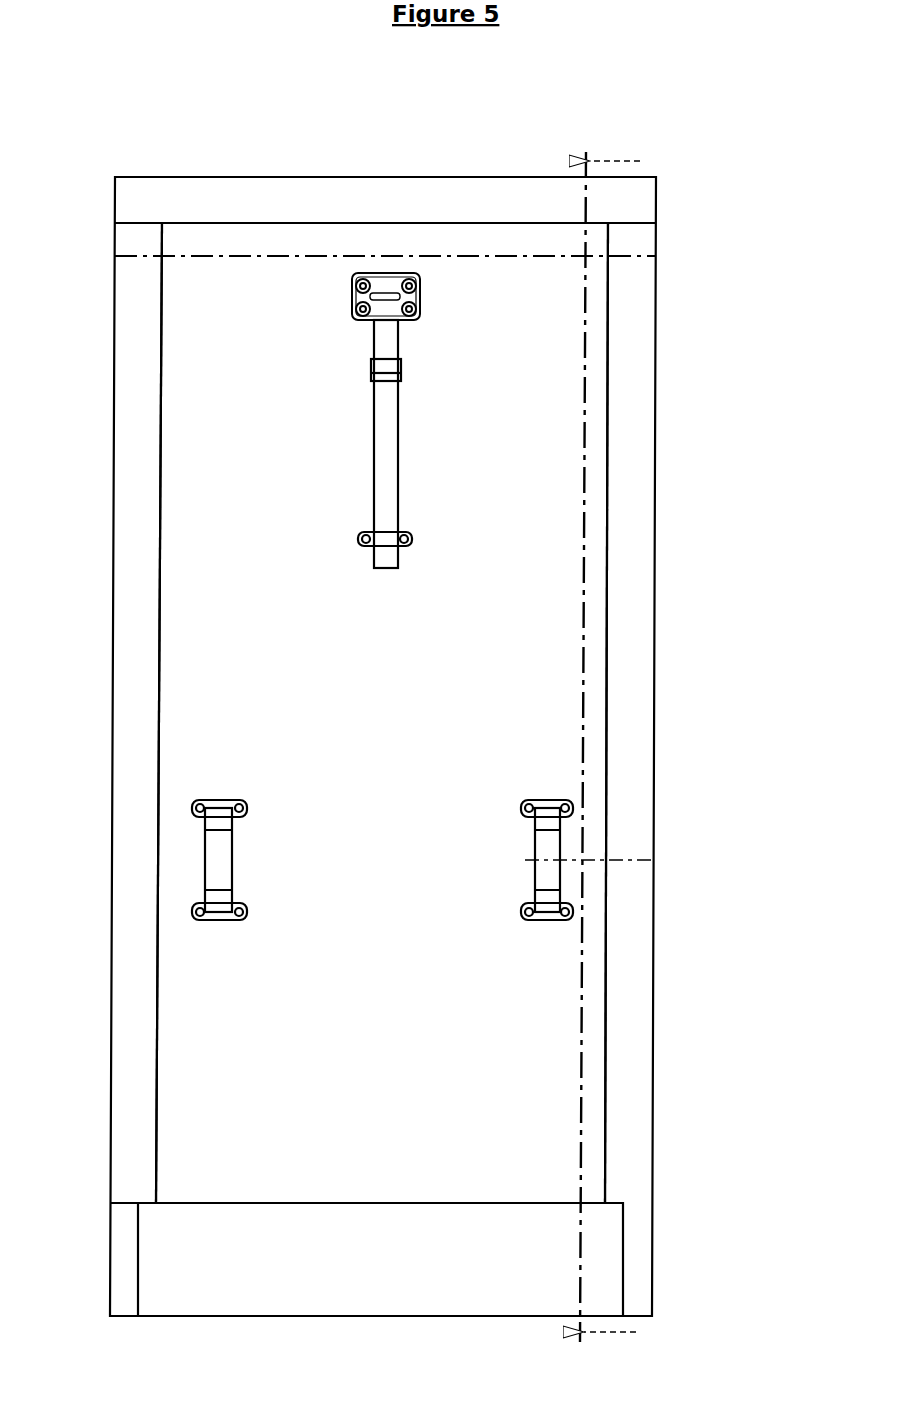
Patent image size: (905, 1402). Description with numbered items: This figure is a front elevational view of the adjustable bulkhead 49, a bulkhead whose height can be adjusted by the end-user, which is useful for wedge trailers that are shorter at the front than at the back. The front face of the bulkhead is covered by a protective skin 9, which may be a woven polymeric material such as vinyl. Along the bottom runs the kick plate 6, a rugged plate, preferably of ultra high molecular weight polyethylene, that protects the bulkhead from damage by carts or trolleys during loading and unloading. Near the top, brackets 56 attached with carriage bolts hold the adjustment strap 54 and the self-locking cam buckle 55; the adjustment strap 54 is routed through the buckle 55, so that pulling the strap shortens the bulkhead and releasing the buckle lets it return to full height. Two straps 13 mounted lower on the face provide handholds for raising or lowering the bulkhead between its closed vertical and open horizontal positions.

The adjustable bulkhead 49 is at (269, 157).
The protective skin 9 is at (486, 714).
The kick plate 6 is at (508, 1254).
The brackets 56 is at (428, 297).
The self-locking cam buckle 55 is at (403, 349).
The adjustment strap 54 is at (386, 500).
The straps 13 is at (563, 858).